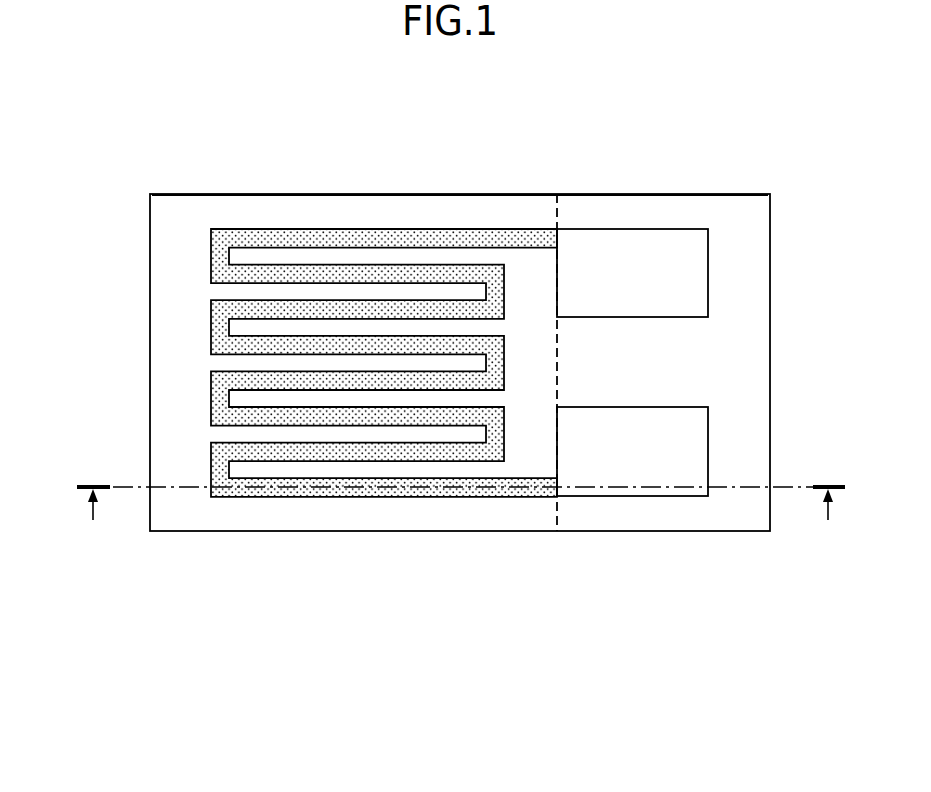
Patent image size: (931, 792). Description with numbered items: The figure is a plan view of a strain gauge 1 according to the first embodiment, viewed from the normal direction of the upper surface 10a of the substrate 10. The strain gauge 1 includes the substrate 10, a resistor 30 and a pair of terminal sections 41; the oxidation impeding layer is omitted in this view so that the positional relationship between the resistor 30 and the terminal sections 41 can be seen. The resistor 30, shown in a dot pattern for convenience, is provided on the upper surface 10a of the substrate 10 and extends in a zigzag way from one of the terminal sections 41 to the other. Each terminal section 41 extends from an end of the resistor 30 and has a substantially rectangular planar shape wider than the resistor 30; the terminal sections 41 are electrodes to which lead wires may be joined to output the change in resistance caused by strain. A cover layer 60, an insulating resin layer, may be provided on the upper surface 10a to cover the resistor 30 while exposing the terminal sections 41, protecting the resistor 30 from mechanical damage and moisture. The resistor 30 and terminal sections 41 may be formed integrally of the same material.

The strain gauge 1 is at (27, 146).
The substrate 10 is at (199, 185).
The upper surface of the substrate 10a is at (291, 212).
The resistor 30 is at (415, 238).
The terminal section 41 is at (643, 250).
The cover layer 60 is at (561, 214).